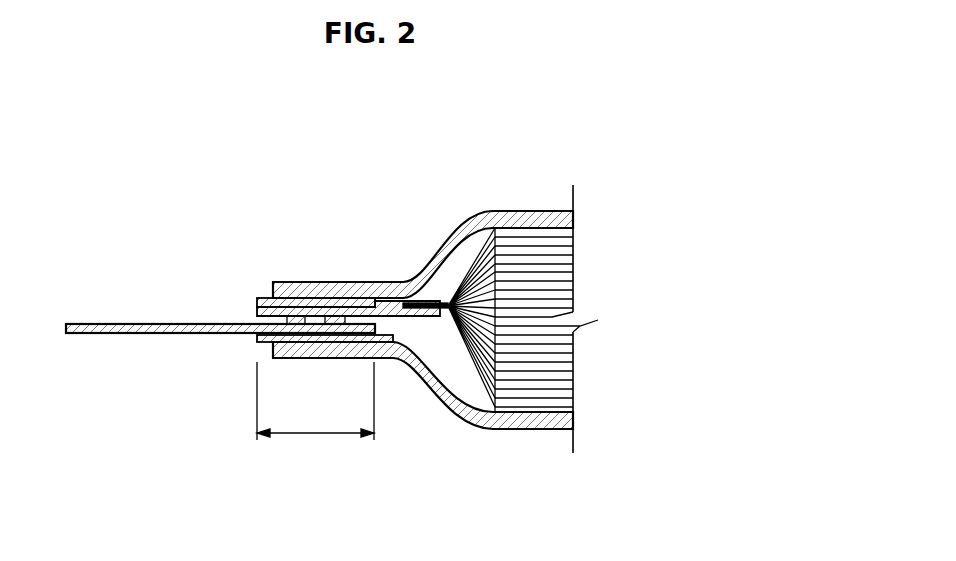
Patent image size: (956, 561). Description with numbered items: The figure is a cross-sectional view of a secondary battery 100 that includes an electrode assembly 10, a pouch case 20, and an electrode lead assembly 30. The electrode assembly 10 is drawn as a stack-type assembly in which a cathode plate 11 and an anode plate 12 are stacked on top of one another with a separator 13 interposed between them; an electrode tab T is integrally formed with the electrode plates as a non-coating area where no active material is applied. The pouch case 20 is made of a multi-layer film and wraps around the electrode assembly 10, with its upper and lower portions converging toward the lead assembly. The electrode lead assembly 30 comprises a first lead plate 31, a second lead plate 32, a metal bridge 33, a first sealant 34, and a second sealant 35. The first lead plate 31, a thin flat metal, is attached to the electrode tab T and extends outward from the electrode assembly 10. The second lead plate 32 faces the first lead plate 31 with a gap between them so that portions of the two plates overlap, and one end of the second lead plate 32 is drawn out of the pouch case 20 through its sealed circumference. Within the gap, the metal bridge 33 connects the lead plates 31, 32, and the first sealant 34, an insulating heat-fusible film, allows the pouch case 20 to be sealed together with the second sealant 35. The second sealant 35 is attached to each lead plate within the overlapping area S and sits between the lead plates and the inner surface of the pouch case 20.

The secondary battery 100 is at (561, 148).
The electrode assembly 10 is at (636, 350).
The cathode plate 11 is at (569, 381).
The anode plate 12 is at (569, 389).
The separator 13 is at (569, 399).
The pouch case 20 is at (520, 211).
The electrode lead assembly 30 is at (240, 290).
The first lead plate 31 is at (387, 310).
The second lead plate 32 is at (113, 323).
The metal bridge 33 is at (335, 324).
The first sealant 34 is at (293, 324).
The second sealant 35 is at (312, 338).
The electrode tab T is at (440, 312).
The overlapping area S is at (315, 401).